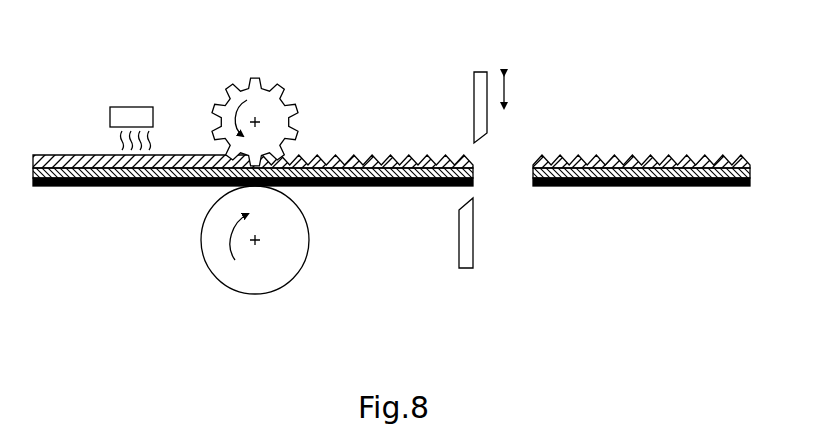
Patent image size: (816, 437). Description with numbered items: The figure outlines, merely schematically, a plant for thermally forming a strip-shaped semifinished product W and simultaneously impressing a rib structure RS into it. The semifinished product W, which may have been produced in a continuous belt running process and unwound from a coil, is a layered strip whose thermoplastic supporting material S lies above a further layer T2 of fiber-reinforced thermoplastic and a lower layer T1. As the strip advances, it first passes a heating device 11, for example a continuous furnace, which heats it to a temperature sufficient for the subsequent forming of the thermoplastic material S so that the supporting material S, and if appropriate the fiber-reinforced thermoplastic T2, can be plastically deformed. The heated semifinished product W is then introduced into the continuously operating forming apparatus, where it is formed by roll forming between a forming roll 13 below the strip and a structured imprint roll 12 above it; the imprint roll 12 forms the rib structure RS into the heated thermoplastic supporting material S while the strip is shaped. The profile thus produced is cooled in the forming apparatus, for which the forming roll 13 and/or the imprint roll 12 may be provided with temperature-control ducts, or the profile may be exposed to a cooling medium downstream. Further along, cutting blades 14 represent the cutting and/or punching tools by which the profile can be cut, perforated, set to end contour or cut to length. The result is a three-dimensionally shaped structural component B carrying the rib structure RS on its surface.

The heating device 11 is at (128, 107).
The structured imprint roll 12 is at (265, 108).
The forming roll 13 is at (248, 278).
The cutting blades 14 is at (474, 90).
The strip-shaped semifinished product W is at (54, 138).
The thermoplastic supporting material S is at (186, 155).
The rib structure RS is at (360, 160).
The three-dimensionally shaped structural component B is at (631, 138).
The carrier layer T1 is at (62, 186).
The fiber-reinforced thermoplastic T2 is at (118, 176).